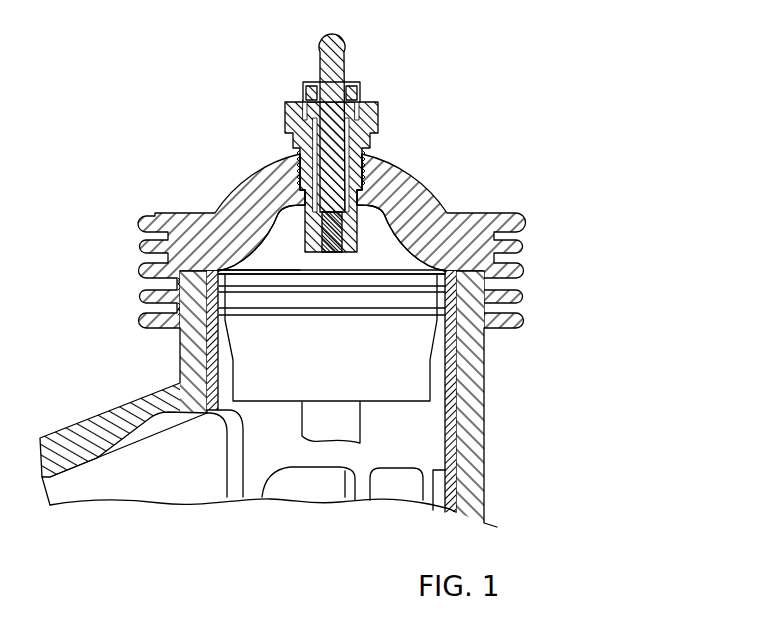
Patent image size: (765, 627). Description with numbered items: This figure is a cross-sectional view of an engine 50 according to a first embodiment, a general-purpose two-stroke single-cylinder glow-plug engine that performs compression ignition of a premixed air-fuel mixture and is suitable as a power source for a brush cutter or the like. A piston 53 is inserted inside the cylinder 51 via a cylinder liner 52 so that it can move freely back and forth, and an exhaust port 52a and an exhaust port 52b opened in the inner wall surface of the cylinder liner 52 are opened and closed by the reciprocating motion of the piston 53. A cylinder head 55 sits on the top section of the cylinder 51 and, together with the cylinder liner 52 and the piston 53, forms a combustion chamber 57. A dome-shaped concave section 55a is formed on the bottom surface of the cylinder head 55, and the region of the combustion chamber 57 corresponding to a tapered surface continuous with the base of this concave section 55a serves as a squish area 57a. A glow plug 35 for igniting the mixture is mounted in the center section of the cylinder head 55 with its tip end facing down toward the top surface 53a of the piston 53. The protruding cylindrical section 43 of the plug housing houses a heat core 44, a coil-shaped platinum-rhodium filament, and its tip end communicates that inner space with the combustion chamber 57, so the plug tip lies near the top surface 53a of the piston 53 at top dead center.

The glow plug 35 is at (389, 88).
The cylindrical section 43 is at (303, 226).
The heat core 44 is at (306, 208).
The engine 50 is at (582, 144).
The cylinder 51 is at (472, 442).
The cylinder liner 52 is at (458, 383).
The exhaust port 52a is at (348, 494).
The exhaust port 52b is at (232, 470).
The piston 53 is at (418, 345).
The top surface 53a is at (370, 275).
The cylinder head 55 is at (447, 208).
The concave section 55a is at (383, 236).
The combustion chamber 57 is at (297, 258).
The squish area 57a is at (257, 266).